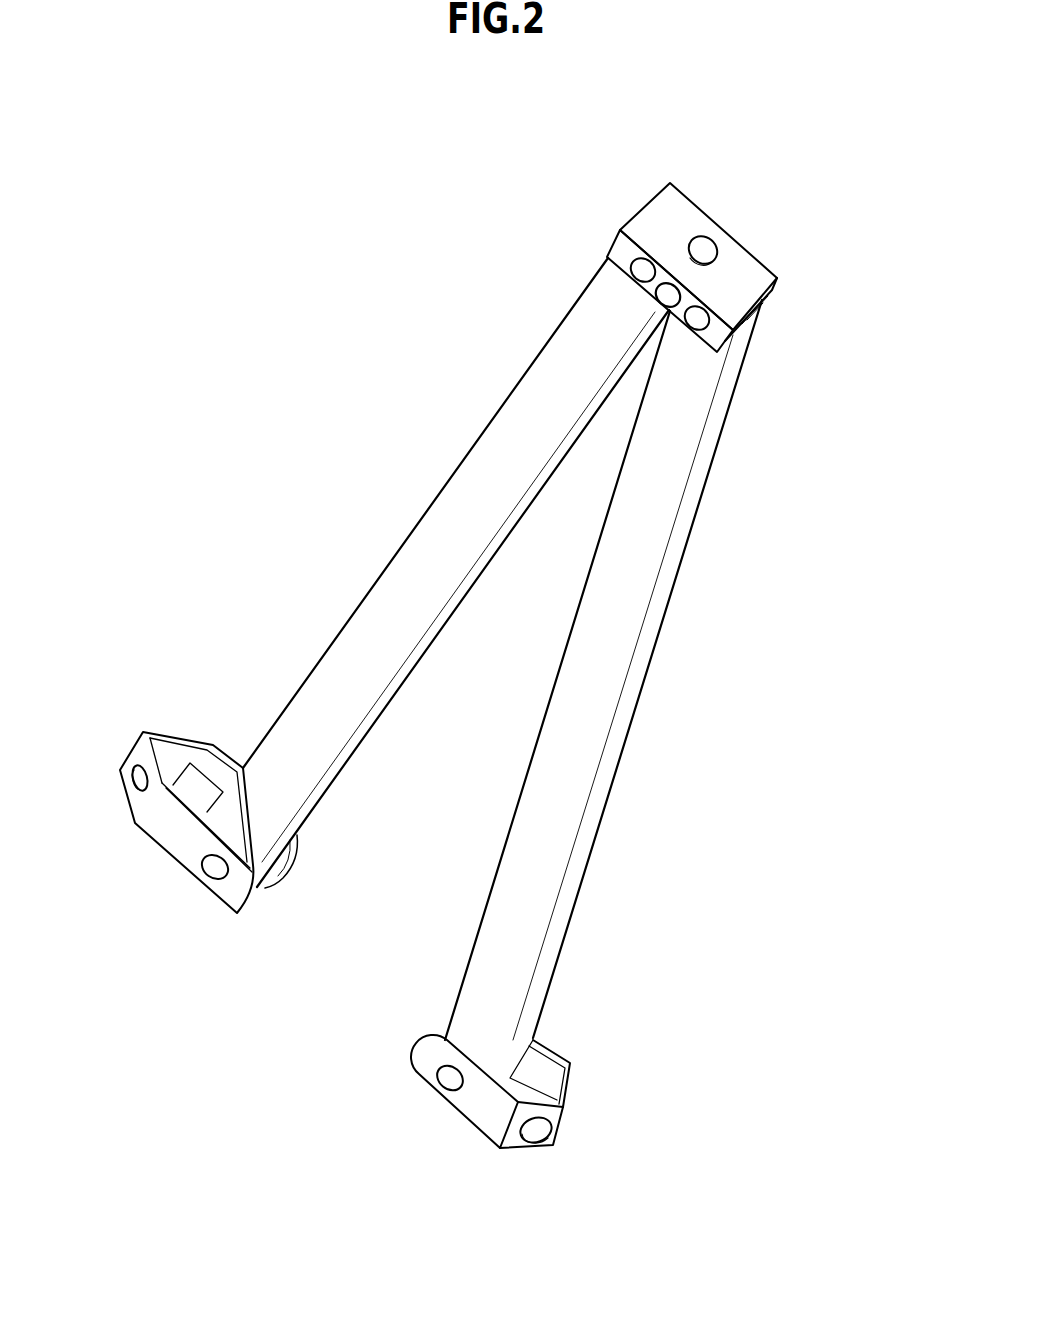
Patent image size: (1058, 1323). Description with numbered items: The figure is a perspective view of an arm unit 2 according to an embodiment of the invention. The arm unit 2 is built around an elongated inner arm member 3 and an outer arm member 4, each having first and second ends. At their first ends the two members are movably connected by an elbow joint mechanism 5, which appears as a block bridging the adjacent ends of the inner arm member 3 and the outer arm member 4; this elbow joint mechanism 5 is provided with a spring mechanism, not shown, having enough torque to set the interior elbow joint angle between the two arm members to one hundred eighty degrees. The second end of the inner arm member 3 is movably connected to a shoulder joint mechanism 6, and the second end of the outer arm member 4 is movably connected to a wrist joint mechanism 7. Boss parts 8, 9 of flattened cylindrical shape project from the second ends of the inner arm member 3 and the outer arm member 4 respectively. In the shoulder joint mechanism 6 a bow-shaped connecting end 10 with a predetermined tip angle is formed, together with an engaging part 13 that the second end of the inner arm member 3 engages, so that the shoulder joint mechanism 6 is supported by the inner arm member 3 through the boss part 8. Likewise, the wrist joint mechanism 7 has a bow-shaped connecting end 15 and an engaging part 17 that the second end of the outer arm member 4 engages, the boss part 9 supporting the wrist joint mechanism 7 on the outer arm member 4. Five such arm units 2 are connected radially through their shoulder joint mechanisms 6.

The arm unit 2 is at (688, 573).
The inner arm member 3 is at (545, 388).
The outer arm member 4 is at (708, 402).
The elbow joint mechanism 5 is at (688, 222).
The shoulder joint mechanism 6 is at (174, 858).
The wrist joint mechanism 7 is at (489, 1148).
The boss part 8 is at (217, 873).
The boss part 9 is at (437, 1088).
The connecting end 10 is at (132, 793).
The engaging part 13 is at (270, 883).
The connecting end 15 is at (543, 1147).
The engaging part 17 is at (472, 1105).